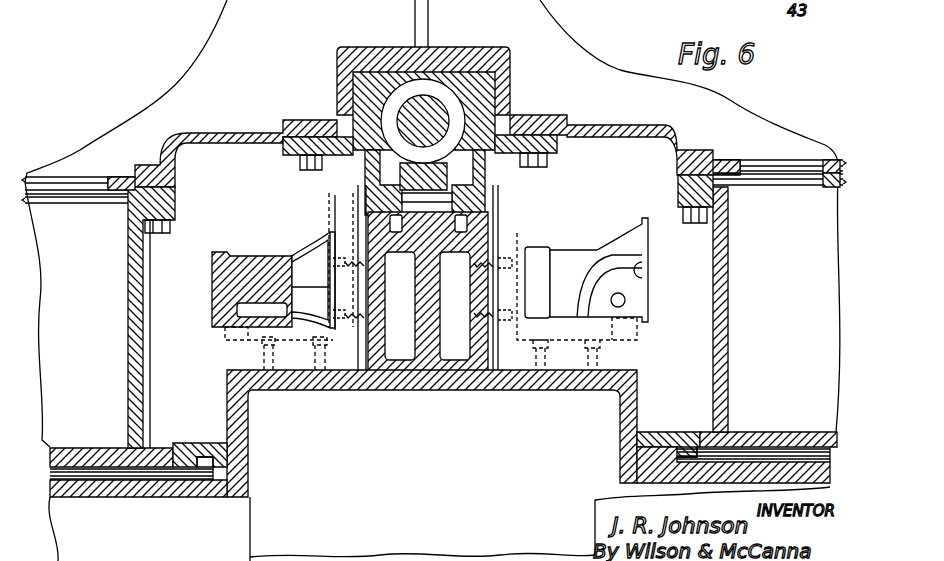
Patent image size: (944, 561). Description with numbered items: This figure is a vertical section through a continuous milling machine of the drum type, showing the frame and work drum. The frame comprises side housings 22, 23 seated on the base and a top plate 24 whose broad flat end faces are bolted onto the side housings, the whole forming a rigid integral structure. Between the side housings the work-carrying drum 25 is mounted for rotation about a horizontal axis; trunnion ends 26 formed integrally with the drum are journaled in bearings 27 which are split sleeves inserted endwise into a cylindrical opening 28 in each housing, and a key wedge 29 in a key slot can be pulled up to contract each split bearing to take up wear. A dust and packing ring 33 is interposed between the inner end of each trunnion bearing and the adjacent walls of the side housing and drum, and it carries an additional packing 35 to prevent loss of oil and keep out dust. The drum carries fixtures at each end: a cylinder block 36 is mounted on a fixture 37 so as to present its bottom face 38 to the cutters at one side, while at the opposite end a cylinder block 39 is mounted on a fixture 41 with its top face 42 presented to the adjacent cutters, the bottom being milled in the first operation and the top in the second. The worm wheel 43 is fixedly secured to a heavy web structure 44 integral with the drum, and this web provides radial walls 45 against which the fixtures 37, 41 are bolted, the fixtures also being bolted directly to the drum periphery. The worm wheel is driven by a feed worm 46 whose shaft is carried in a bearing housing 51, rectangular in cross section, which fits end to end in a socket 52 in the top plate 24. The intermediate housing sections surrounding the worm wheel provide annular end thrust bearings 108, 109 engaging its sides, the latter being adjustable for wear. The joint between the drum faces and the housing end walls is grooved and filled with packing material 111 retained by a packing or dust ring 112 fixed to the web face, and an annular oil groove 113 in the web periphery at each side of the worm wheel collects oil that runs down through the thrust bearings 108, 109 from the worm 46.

The side housing 22 is at (118, 412).
The side housing 23 is at (740, 380).
The top plate 24 is at (195, 122).
The work-carrying drum 25 is at (542, 388).
The trunnion end 26 is at (90, 498).
The bearing 27 is at (145, 477).
The cylindrical opening 28 is at (173, 477).
The key wedge 29 is at (77, 467).
The dust and packing ring 33 is at (202, 443).
The packing 35 is at (648, 447).
The cylinder block 36 is at (570, 258).
The fixture 37 is at (617, 352).
The bottom face 38 is at (645, 225).
The cylinder block 39 is at (247, 254).
The fixture 41 is at (238, 350).
The top face 42 is at (212, 265).
The worm wheel 43 is at (405, 175).
The web structure 44 is at (428, 292).
The radial wall 45 is at (365, 330).
The feed worm 46 is at (432, 96).
The bearing housing 51 is at (485, 85).
The socket 52 is at (382, 70).
The end thrust bearing 108 is at (392, 194).
The end thrust bearing 109 is at (475, 192).
The packing material 111 is at (352, 203).
The packing or dust ring 112 is at (352, 220).
The annular oil groove 113 is at (458, 233).